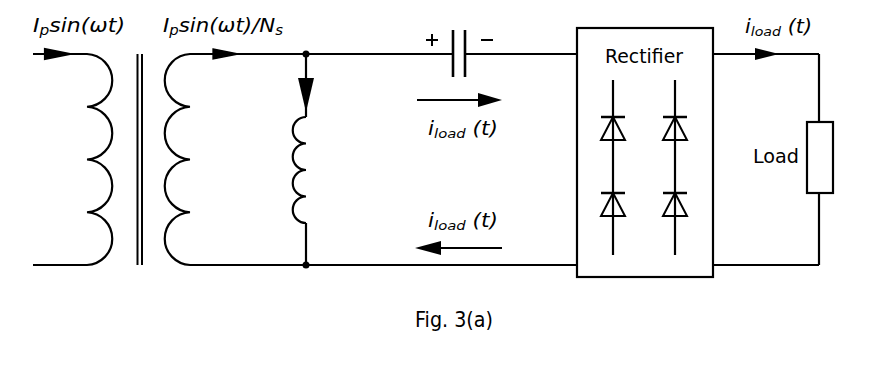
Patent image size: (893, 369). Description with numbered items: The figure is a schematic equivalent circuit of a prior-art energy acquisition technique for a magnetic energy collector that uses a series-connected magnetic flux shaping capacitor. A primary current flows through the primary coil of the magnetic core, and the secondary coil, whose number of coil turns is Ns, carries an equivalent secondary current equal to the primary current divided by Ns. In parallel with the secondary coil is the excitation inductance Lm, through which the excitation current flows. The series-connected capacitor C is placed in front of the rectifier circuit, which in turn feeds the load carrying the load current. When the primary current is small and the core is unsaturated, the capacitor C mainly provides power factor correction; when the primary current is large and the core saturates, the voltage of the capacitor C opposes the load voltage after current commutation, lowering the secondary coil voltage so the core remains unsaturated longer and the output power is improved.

The number of coil turns Ns is at (235, 157).
The excitation inductance Lm is at (328, 159).
The series-connected magnetic flux shaping capacitor C is at (459, 43).